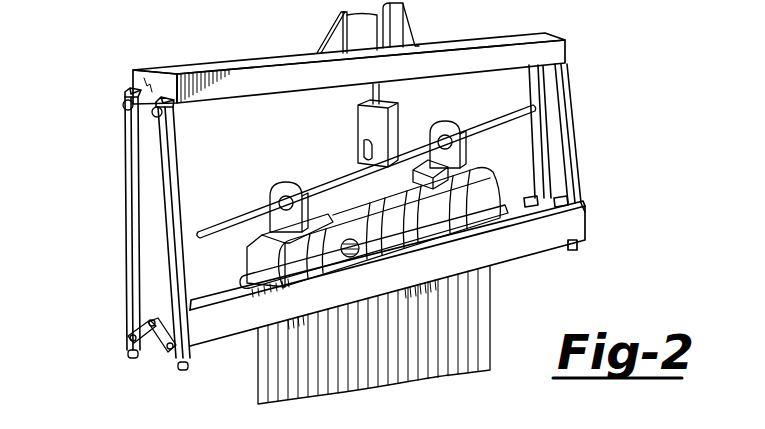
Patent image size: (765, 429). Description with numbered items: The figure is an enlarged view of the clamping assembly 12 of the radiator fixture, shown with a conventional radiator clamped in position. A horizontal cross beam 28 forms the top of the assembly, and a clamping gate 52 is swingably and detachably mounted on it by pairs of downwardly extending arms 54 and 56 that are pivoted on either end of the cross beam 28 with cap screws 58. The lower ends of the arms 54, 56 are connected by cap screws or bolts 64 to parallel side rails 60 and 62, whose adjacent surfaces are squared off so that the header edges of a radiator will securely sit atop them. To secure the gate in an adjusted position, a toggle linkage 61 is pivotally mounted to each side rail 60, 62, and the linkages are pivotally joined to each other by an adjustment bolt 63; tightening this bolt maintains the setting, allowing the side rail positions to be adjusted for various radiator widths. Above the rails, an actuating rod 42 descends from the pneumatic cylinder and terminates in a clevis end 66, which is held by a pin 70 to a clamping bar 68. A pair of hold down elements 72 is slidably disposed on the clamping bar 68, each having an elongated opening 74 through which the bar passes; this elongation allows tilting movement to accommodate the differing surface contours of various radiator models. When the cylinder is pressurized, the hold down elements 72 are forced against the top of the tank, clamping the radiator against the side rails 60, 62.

The clamping assembly 12 is at (122, 49).
The cross beam 28 is at (240, 62).
The actuating rod 42 is at (382, 86).
The clamping gate 52 is at (150, 318).
The arms 54 is at (167, 240).
The arms 56 is at (125, 192).
The cap screws 58 is at (123, 106).
The side rail 60 is at (510, 248).
The toggle linkage 61 is at (130, 337).
The side rail 62 is at (240, 280).
The adjustment bolt 63 is at (157, 346).
The cap screws or bolts 64 is at (132, 352).
The clevis end 66 is at (358, 128).
The clamping bar 68 is at (305, 185).
The pin 70 is at (370, 152).
The hold down elements 72 is at (262, 195).
The elongated opening 74 is at (250, 260).